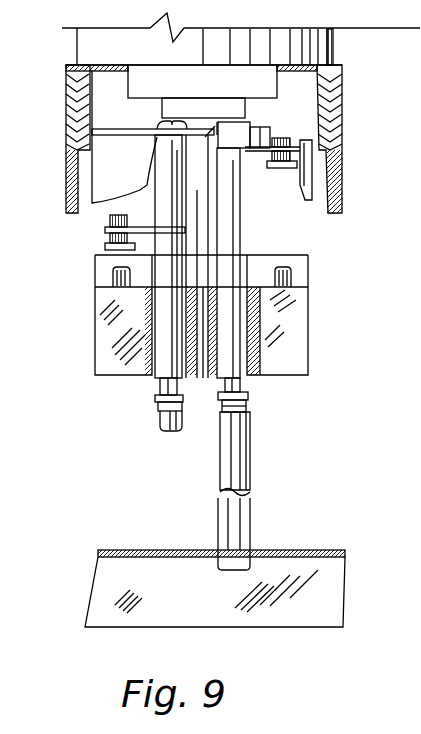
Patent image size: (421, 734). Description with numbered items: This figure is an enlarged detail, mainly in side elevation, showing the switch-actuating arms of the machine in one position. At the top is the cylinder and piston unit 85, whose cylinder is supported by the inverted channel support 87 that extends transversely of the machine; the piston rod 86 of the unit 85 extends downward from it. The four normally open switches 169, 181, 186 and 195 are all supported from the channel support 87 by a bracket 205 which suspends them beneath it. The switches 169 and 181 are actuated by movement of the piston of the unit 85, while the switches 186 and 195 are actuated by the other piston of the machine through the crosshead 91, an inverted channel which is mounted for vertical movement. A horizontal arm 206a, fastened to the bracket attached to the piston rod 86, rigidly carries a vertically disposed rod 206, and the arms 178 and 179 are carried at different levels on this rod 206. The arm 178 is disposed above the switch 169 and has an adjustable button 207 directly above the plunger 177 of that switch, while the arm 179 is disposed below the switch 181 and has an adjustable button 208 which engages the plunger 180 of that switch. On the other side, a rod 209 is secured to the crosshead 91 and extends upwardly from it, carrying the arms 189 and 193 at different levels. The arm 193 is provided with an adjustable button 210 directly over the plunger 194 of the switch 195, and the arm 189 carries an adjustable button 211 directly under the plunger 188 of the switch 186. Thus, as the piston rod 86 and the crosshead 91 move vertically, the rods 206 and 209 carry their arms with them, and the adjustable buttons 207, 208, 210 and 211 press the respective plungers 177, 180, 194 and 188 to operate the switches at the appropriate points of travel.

The cylinder and piston unit 85 is at (331, 45).
The piston rod 86 is at (246, 106).
The inverted channel support 87 is at (343, 175).
The crosshead 91 is at (287, 552).
The normally open switch 169 is at (105, 330).
The plunger 177 is at (112, 277).
The arm 178 is at (105, 230).
The arm 179 is at (158, 417).
The plunger 180 is at (160, 390).
The normally open switch 181 is at (152, 363).
The normally open switch 186 is at (256, 378).
The plunger 188 is at (222, 420).
The arm 189 is at (224, 418).
The arm 193 is at (253, 153).
The plunger 194 is at (292, 275).
The normally open switch 195 is at (300, 316).
The bracket 205 is at (310, 256).
The rod 206 is at (162, 180).
The horizontal arm 206a is at (117, 128).
The adjustable button 207 is at (105, 247).
The adjustable button 208 is at (158, 404).
The rod 209 is at (250, 452).
The adjustable button 210 is at (283, 170).
The adjustable button 211 is at (248, 403).